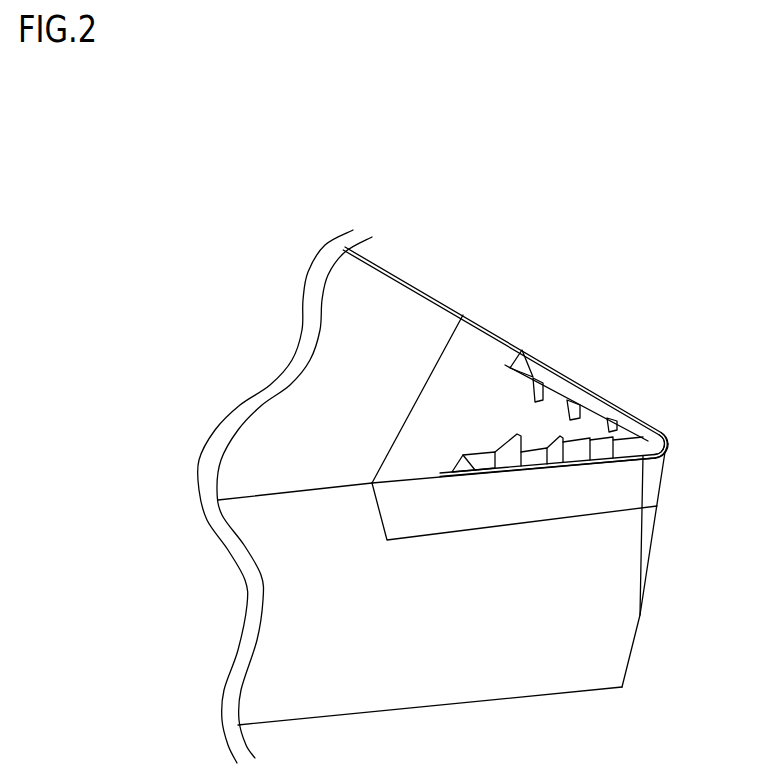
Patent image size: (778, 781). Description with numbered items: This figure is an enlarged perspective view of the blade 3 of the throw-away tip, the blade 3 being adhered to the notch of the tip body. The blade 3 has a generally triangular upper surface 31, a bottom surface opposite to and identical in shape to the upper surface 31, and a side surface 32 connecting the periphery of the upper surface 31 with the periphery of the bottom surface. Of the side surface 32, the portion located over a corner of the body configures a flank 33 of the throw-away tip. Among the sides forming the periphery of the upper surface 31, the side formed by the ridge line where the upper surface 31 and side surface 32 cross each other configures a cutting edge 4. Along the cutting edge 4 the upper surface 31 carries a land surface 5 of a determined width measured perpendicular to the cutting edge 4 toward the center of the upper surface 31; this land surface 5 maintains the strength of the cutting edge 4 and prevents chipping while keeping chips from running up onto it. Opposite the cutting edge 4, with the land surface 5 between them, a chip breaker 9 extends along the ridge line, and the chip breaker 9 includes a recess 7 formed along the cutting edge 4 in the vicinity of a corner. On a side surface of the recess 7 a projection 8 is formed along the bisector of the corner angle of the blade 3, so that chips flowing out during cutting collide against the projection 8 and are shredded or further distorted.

The blade 3 is at (485, 316).
The upper surface 31 is at (493, 355).
The side surface 32 is at (540, 497).
The flank 33 is at (650, 497).
The cutting edge 4 is at (668, 440).
The land surface 5 is at (668, 435).
The recess 7 is at (668, 448).
The projection 8 is at (648, 437).
The chip breaker 9 is at (583, 397).